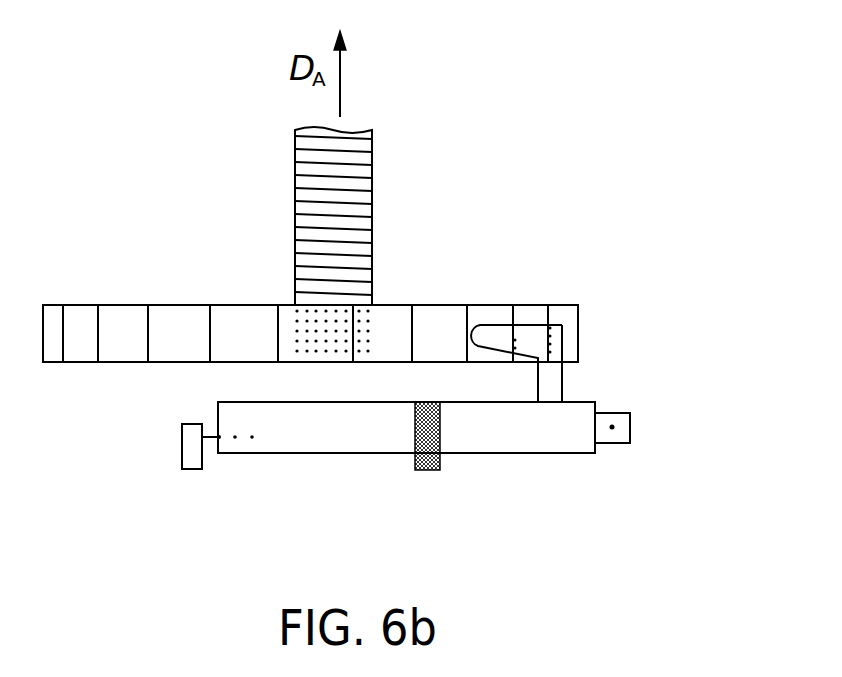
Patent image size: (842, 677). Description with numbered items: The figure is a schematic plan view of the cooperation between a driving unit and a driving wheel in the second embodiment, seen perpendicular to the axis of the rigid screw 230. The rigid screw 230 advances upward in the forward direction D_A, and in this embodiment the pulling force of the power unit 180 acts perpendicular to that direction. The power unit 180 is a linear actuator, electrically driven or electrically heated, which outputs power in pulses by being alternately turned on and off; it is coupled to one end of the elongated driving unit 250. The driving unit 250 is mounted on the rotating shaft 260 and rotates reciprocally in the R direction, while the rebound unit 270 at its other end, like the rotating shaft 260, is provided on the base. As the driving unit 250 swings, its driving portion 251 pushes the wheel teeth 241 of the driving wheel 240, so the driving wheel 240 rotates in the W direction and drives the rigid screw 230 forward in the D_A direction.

The power unit 180 is at (612, 427).
The rigid screw 230 is at (372, 165).
The driving wheel 240 is at (117, 305).
The wheel teeth 241 is at (202, 318).
The driving unit 250 is at (535, 440).
The driving portion 251 is at (482, 337).
The rotating shaft 260 is at (427, 470).
The rebound unit 270 is at (195, 470).